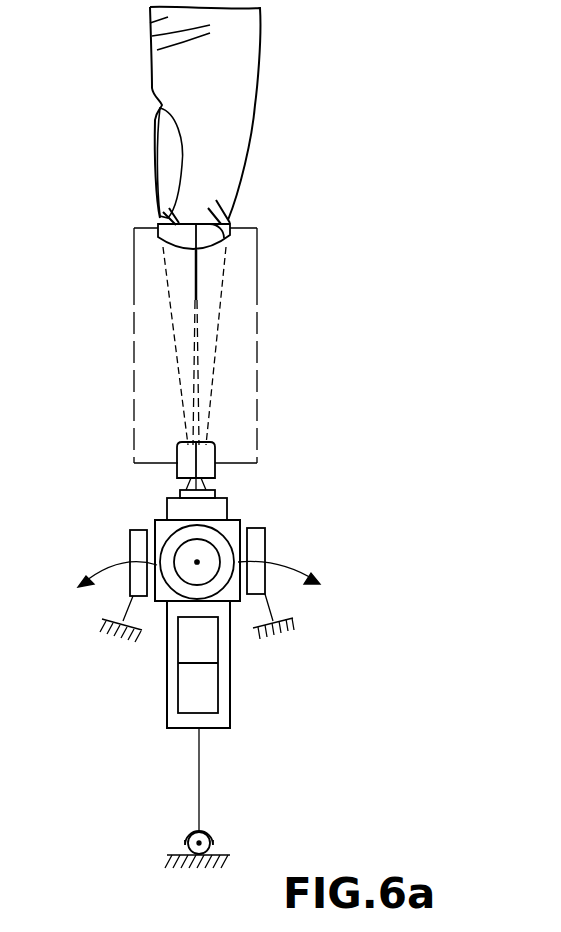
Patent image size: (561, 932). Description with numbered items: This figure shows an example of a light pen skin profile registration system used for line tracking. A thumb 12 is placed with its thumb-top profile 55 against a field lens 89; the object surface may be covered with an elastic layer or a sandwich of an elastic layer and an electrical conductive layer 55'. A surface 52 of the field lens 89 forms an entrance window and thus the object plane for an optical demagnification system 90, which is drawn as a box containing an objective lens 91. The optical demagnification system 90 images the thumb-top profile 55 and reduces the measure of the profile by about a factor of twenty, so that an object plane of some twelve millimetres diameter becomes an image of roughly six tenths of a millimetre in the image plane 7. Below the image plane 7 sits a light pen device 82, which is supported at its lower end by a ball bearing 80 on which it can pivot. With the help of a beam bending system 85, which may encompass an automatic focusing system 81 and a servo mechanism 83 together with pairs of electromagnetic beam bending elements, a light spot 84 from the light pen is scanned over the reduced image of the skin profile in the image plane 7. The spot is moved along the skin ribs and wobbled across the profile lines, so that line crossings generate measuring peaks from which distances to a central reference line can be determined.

The thumb 12 is at (153, 73).
The thumb-top profile 55 is at (265, 178).
The electrical conductive layer 55' is at (126, 200).
The field lens 89 is at (230, 222).
The surface 52 is at (224, 240).
The optical demagnification system 90 is at (133, 360).
The objective lens 91 is at (215, 470).
The image plane 7 is at (207, 482).
The light spot 84 is at (177, 490).
The beam bending system 85 is at (237, 527).
The automatic focusing system 81 is at (177, 645).
The light pen device 82 is at (230, 685).
The servo mechanism 83 is at (180, 692).
The ball bearing 80 is at (212, 834).